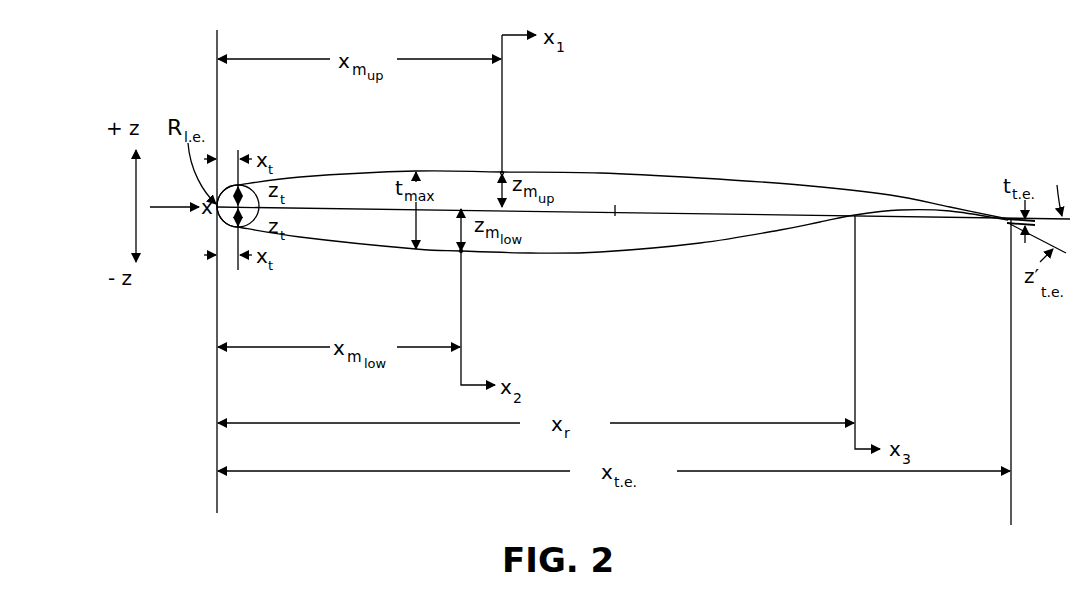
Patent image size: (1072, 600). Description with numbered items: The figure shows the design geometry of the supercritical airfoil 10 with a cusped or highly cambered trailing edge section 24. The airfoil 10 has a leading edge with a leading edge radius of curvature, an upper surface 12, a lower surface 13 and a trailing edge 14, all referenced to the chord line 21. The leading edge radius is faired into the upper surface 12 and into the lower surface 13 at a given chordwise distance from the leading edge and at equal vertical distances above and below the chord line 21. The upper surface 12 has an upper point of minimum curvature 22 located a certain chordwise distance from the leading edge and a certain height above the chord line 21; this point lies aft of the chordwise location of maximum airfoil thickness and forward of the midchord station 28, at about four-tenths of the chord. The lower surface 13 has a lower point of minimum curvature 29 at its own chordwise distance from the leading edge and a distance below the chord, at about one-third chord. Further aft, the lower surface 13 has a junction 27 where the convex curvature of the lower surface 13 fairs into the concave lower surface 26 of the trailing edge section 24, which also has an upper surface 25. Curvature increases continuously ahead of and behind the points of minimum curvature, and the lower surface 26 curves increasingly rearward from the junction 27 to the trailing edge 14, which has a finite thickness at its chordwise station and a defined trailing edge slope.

The supercritical airfoil 10 is at (677, 201).
The upper surface 12 is at (588, 170).
The lower surface 13 is at (563, 256).
The trailing edge 14 is at (1008, 222).
The chord line 21 is at (703, 212).
The upper point of minimum curvature 22 is at (505, 172).
The trailing edge section 24 is at (895, 201).
The upper surface of trailing edge section 25 is at (950, 202).
The lower surface of trailing edge section 26 is at (922, 212).
The junction 27 is at (840, 220).
The midchord station 28 is at (615, 215).
The lower point of minimum curvature 29 is at (463, 254).